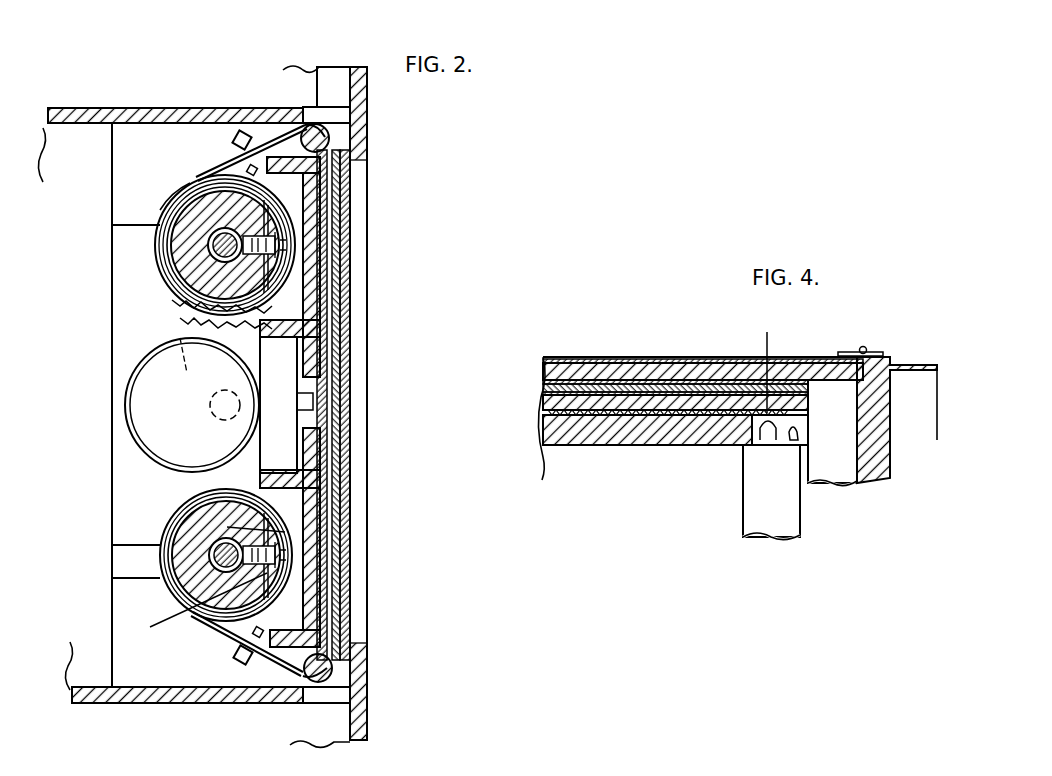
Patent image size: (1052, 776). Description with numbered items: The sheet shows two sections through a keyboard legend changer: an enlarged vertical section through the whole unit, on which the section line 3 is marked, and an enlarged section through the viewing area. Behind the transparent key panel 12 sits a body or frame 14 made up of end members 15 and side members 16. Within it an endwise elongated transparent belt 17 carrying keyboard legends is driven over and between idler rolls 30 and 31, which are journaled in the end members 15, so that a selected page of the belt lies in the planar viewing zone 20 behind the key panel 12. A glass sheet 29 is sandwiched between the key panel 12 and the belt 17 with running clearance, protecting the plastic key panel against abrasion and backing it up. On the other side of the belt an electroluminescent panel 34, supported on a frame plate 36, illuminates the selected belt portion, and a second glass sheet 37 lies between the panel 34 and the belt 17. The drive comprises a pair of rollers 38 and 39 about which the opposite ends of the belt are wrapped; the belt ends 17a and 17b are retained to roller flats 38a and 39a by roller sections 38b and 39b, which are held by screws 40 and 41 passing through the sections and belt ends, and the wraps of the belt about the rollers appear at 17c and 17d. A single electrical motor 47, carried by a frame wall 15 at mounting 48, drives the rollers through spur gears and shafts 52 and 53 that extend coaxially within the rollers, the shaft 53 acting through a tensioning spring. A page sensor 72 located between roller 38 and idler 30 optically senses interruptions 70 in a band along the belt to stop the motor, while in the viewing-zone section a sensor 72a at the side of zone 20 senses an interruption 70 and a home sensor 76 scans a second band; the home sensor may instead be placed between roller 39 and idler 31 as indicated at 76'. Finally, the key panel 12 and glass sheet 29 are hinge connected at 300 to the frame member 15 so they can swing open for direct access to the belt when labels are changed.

In FIG. 2, the section line 3 is at (76, 77).
In FIG. 2, the transparent key panel 12 is at (348, 367).
In FIG. 4, the transparent key panel 12 is at (641, 358).
In FIG. 2, the body or frame 14 is at (108, 513).
In FIG. 4, the end member 15 is at (885, 462).
In FIG. 2, the side member 16 is at (148, 108).
In FIG. 2, the belt 17 is at (334, 412).
In FIG. 4, the belt 17 is at (572, 385).
In FIG. 2, the belt end 17a is at (277, 217).
In FIG. 2, the belt end 17b is at (237, 525).
In FIG. 2, the belt wrap 17c is at (160, 210).
In FIG. 2, the belt wrap 17d is at (175, 528).
In FIG. 4, the planar viewing zone 20 is at (690, 385).
In FIG. 4, the glass sheet 29 is at (597, 372).
In FIG. 2, the idler roll 30 is at (320, 128).
In FIG. 2, the idler roll 31 is at (327, 672).
In FIG. 4, the electroluminescent panel 34 is at (575, 413).
In FIG. 4, the frame plate 36 is at (633, 437).
In FIG. 4, the glass sheet 37 is at (550, 403).
In FIG. 2, the roller 38 is at (180, 267).
In FIG. 2, the roller flat 38a is at (180, 283).
In FIG. 2, the roller section 38b is at (286, 215).
In FIG. 2, the roller 39 is at (190, 582).
In FIG. 2, the roller flat 39a is at (196, 614).
In FIG. 2, the roller section 39b is at (274, 531).
In FIG. 2, the screw 40 is at (274, 250).
In FIG. 2, the screw 41 is at (287, 567).
In FIG. 2, the electrical motor 47 is at (150, 372).
In FIG. 2, the motor mounting 48 is at (137, 440).
In FIG. 2, the shaft 52 is at (208, 250).
In FIG. 2, the shaft 53 is at (210, 553).
In FIG. 4, the interruption 70 is at (773, 380).
In FIG. 2, the page sensor 72 is at (242, 132).
In FIG. 2, the sensor 72a is at (282, 450).
In FIG. 4, the sensor 72a is at (750, 520).
In FIG. 4, the home sensor 76 is at (800, 478).
In FIG. 2, the home sensor location 76' is at (241, 687).
In FIG. 4, the hinge connection 300 is at (866, 347).